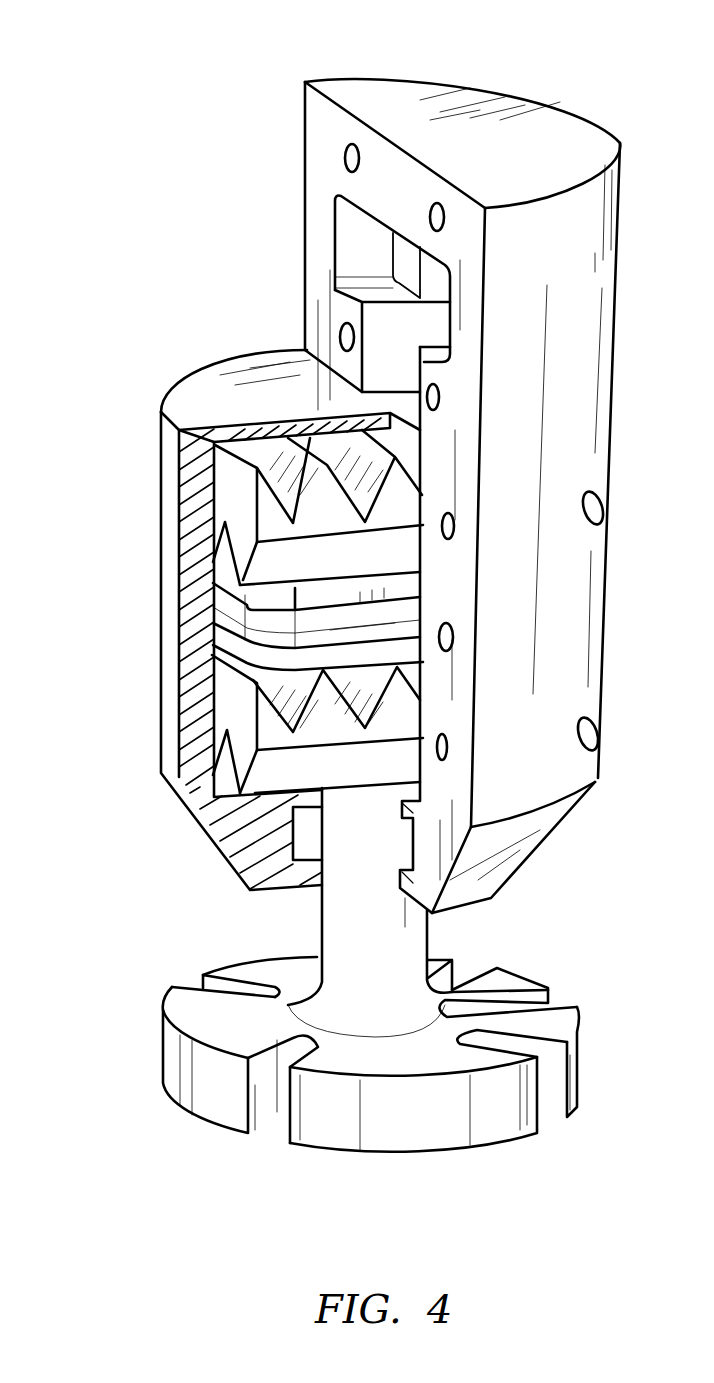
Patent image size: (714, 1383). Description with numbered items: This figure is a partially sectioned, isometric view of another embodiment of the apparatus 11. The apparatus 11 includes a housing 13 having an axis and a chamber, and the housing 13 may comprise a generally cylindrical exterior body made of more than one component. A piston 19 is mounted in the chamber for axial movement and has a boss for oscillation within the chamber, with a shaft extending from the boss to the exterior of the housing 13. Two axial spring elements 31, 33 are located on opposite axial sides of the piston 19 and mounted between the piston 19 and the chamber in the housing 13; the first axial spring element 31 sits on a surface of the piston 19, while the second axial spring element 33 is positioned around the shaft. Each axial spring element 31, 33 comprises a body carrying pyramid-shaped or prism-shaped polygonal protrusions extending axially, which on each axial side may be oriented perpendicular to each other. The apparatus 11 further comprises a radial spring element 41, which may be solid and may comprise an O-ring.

The apparatus 11 is at (118, 48).
The housing 13 is at (553, 124).
The piston 19 is at (170, 1063).
The first axial spring element 31 is at (240, 477).
The second axial spring element 33 is at (263, 723).
The radial spring element 41 is at (237, 613).